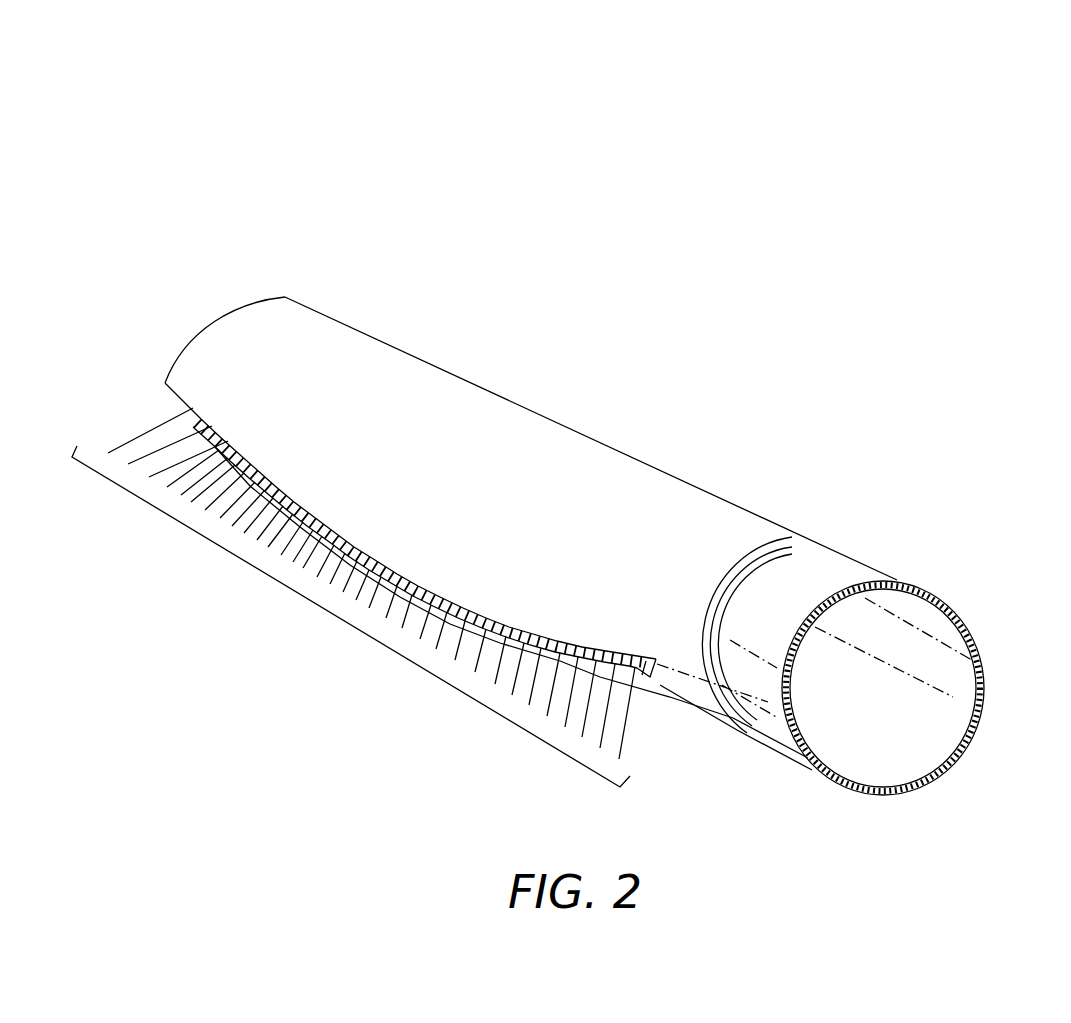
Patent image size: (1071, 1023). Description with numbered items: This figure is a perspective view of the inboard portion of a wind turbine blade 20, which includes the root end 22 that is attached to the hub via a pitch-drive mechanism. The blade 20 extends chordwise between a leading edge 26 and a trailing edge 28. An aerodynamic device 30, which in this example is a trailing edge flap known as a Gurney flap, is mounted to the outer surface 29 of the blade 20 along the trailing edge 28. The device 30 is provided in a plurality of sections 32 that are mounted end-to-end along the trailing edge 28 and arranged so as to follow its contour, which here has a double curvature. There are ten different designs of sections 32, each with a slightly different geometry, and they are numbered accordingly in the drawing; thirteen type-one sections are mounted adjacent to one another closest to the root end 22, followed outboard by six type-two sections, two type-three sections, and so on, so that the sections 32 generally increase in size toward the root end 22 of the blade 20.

The wind turbine blade 20 is at (740, 92).
The root end 22 is at (856, 576).
The leading edge 26 is at (653, 468).
The trailing edge 28 is at (165, 383).
The outer surface 29 is at (280, 318).
The aerodynamic device 30 is at (216, 636).
The sections 32 is at (344, 621).